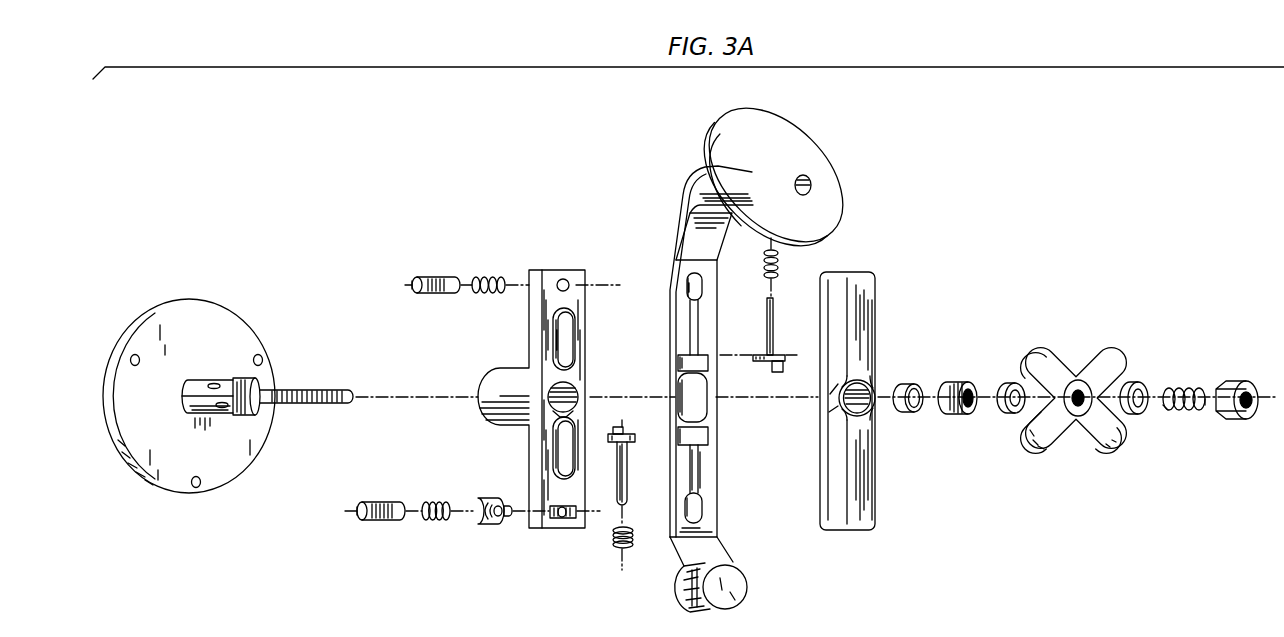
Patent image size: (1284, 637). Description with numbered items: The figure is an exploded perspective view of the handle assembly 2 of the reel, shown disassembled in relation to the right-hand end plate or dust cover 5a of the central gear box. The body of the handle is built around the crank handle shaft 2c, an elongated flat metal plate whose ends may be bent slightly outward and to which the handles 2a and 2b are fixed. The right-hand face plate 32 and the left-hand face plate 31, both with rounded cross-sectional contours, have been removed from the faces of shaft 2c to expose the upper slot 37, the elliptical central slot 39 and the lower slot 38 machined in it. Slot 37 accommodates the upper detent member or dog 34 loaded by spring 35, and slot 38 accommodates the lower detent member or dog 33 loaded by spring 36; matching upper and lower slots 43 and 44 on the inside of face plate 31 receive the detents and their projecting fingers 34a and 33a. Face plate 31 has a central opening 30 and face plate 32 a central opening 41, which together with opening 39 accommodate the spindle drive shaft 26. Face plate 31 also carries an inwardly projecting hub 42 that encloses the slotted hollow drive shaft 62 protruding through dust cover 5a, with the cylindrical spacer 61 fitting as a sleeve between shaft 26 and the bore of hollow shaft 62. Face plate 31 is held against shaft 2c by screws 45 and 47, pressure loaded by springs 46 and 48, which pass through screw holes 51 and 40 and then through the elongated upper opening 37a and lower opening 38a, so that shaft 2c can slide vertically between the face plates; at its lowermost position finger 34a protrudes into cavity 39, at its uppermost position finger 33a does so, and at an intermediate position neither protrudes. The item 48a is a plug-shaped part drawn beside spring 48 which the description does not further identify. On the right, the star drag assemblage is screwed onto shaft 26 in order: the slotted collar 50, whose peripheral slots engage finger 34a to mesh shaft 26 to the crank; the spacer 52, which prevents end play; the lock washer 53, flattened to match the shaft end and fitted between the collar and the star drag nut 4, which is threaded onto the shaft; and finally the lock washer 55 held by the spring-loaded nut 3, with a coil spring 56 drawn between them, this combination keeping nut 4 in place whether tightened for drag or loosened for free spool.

The handle assembly 2 is at (754, 360).
The handle 2a is at (790, 143).
The handle 2b is at (732, 580).
The crank handle shaft 2c is at (678, 230).
The spring-loaded nut 3 is at (1247, 381).
The star drag nut 4 is at (1062, 430).
The right-hand end plate or dust cover 5a is at (228, 318).
The spindle drive shaft 26 is at (317, 389).
The central opening 30 is at (573, 397).
The left-hand face plate 31 is at (583, 296).
The right-hand face plate 32 is at (868, 456).
The lower detent member or dog 33 is at (627, 460).
The detent finger 33a is at (620, 434).
The upper detent member or dog 34 is at (774, 322).
The detent finger 34a is at (774, 372).
The spring 35 is at (779, 266).
The spring 36 is at (631, 541).
The upper slot 37 is at (703, 341).
The elongated upper opening 37a is at (701, 286).
The lower slot 38 is at (703, 438).
The lower opening 38a is at (697, 505).
The central slot 39 is at (706, 400).
The screw hole 40 is at (562, 521).
The central opening 41 is at (864, 388).
The inwardly projecting hub 42 is at (505, 369).
The upper slot 43 is at (570, 340).
The lower slot 44 is at (570, 450).
The screw 45 is at (440, 278).
The spring 46 is at (488, 280).
The screw 47 is at (383, 504).
The spring 48 is at (432, 504).
The plug 48a is at (488, 503).
The slotted collar 50 is at (961, 382).
The screw hole 51 is at (566, 281).
The spacer 52 is at (911, 413).
The lock washer 53 is at (1013, 384).
The lock washer 55 is at (1139, 385).
The spring 56 is at (1196, 411).
The cylindrical spacer 61 is at (268, 380).
The slotted hollow drive shaft 62 is at (205, 381).